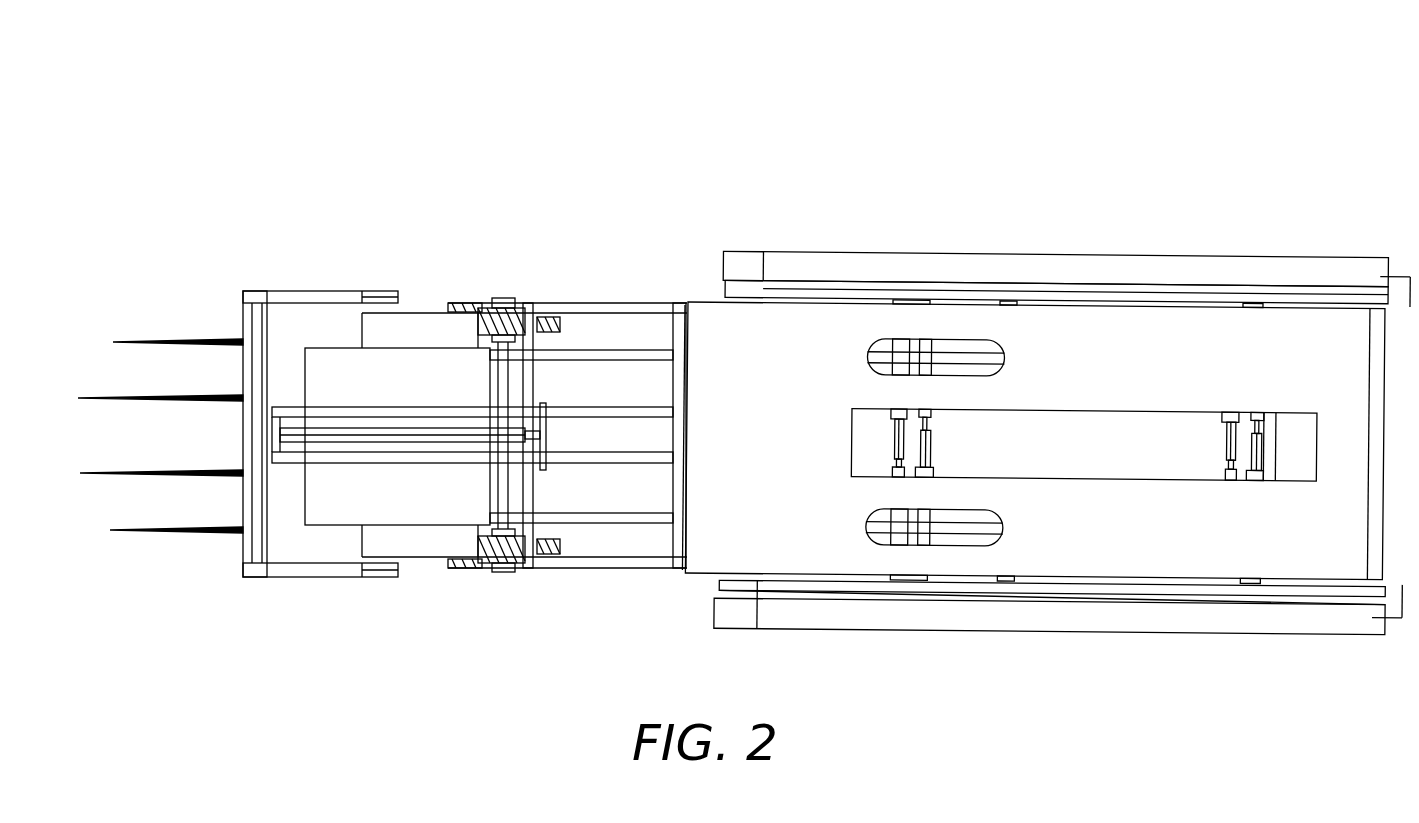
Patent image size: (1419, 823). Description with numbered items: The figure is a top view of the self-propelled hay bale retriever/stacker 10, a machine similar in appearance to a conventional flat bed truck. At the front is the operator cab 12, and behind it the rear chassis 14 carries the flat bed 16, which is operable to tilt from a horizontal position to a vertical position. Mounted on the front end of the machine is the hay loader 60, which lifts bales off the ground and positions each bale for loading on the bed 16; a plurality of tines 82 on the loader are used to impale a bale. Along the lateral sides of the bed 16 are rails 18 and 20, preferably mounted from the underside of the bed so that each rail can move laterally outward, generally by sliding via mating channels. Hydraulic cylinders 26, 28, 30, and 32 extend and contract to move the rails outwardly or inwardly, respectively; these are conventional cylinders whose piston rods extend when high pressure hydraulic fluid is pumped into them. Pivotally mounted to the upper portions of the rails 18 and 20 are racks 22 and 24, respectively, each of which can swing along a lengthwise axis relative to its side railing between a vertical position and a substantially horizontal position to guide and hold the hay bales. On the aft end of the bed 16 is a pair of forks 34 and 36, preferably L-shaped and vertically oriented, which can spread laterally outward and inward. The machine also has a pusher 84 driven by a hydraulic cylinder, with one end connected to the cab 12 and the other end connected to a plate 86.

The self-propelled hay bale retriever/stacker 10 is at (748, 112).
The operator cab 12 is at (427, 373).
The rear chassis 14 is at (602, 523).
The flat bed 16 is at (1184, 380).
The rail 18 is at (905, 618).
The rail 20 is at (962, 270).
The rack 22 is at (1145, 600).
The rack 24 is at (1095, 292).
The hydraulic cylinder 26 is at (893, 430).
The hydraulic cylinder 28 is at (933, 443).
The hydraulic cylinder 30 is at (1228, 442).
The hydraulic cylinder 32 is at (1267, 450).
The fork 34 is at (1402, 618).
The fork 36 is at (1398, 277).
The hay loader 60 is at (272, 260).
The tines 82 is at (190, 533).
The pusher 84 is at (431, 445).
The plate 86 is at (537, 437).